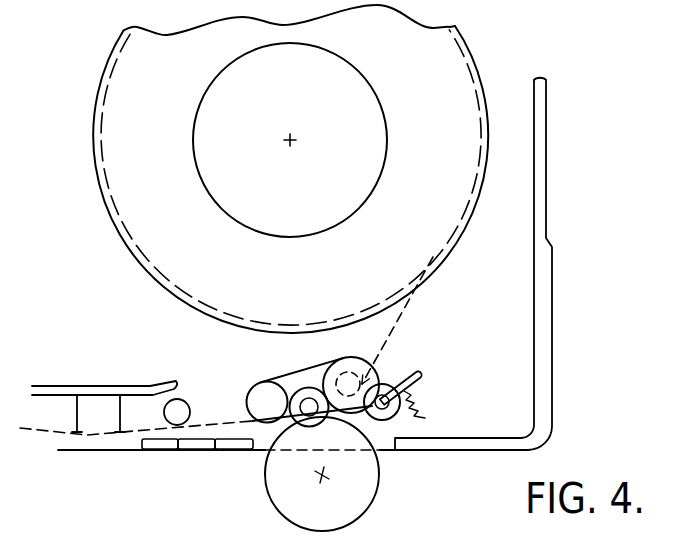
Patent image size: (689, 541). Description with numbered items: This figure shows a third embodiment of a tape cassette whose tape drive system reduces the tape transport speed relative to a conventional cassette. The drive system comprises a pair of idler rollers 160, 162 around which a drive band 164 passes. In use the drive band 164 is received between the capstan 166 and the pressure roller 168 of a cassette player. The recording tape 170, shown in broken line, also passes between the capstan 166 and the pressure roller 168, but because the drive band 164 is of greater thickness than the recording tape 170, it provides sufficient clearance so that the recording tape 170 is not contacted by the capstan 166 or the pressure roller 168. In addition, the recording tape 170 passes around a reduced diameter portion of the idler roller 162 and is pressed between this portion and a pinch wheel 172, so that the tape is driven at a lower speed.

The idler roller 160 is at (272, 410).
The idler roller 162 is at (356, 361).
The drive band 164 is at (303, 370).
The capstan 166 is at (261, 378).
The pressure roller 168 is at (378, 489).
The recording tape 170 is at (410, 325).
The pinch wheel 172 is at (397, 413).